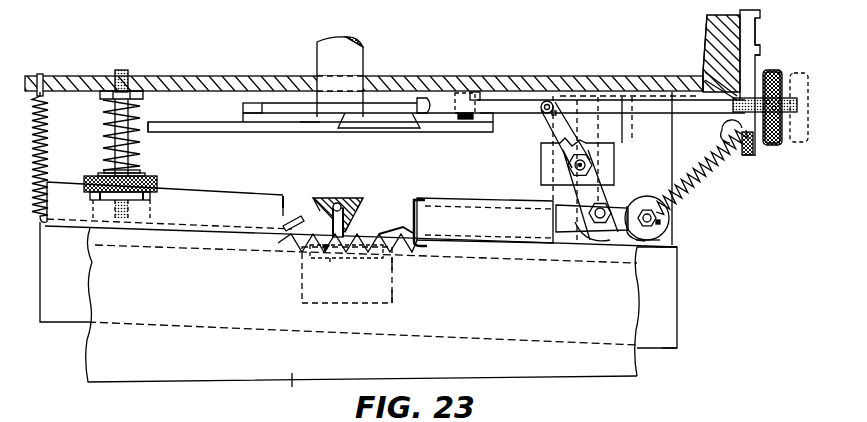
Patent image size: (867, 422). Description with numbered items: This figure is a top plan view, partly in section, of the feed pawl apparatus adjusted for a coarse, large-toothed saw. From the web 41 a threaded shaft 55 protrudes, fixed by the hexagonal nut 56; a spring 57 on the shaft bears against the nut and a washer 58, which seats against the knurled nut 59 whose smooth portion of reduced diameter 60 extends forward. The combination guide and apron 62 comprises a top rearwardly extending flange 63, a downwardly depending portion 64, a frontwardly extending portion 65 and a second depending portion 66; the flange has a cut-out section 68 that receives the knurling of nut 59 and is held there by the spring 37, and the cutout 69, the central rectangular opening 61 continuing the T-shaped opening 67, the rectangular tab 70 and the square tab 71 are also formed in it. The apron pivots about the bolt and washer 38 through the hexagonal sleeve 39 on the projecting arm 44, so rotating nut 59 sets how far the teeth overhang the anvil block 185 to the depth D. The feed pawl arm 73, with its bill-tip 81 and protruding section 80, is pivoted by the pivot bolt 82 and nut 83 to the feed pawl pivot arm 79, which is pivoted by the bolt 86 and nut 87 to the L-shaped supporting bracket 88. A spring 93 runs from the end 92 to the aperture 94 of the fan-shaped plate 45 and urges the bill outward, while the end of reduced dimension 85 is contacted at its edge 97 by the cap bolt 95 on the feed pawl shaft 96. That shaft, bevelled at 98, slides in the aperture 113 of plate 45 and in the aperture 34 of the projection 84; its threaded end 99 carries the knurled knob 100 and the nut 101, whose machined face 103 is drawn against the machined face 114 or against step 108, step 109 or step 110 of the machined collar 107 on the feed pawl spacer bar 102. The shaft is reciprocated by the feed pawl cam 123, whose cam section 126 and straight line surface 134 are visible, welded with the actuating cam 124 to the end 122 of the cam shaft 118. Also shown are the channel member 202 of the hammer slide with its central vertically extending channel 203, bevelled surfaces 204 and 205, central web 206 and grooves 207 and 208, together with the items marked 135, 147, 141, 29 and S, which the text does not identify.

The web 41 is at (197, 76).
The cam shaft 118 is at (365, 46).
The hexagonal nut 56 is at (100, 96).
The spring 37 is at (49, 119).
The threaded shaft 55 is at (103, 136).
The spring 57 is at (104, 160).
The washer 58 is at (98, 174).
The knurled nut 59 is at (152, 177).
The portion of reduced diameter 60 is at (96, 198).
The cut-out section 68 is at (155, 198).
The top rearwardly extending flange 63 is at (212, 191).
The downwardly depending portion 64 is at (71, 228).
The combination guide and apron 62 is at (677, 332).
The frontwardly extending portion 65 is at (670, 308).
The second depending portion 66 is at (668, 349).
The cutout 69 is at (663, 250).
The actuating cam 124 is at (233, 133).
The bar end 135 is at (150, 121).
The slide bar 147 is at (290, 121).
The straight line surface 134 is at (251, 102).
The feed pawl cam 123 is at (285, 104).
The cam section 126 is at (380, 105).
The end of cam shaft 122 is at (312, 123).
The bevelled end 98 is at (420, 97).
The bar end 141 is at (494, 123).
The aperture 34 is at (462, 97).
The projection 84 is at (474, 94).
The feed pawl shaft 96 is at (630, 106).
The cap bolt 95 is at (548, 101).
The edge 97 is at (553, 115).
The end of reduced dimension 85 is at (566, 95).
The bolt 86 is at (594, 167).
The nut 87 is at (592, 163).
The L-shaped supporting bracket 88 is at (541, 163).
The feed pawl pivot arm 79 is at (565, 190).
The pivot bolt 82 is at (600, 226).
The protruding section 80 is at (606, 249).
The nut 83 is at (583, 244).
The bolt and washer 38 is at (647, 198).
The hexagonal sleeve 39 is at (662, 222).
The end of feed pawl arm 92 is at (668, 236).
The spring 93 is at (707, 175).
The projecting arm 44 is at (674, 153).
The aperture 94 is at (722, 132).
The aperture 113 is at (735, 114).
The fan-shaped plate 45 is at (706, 23).
The block face 29 is at (707, 40).
The machined face 103 is at (706, 60).
The machined face 114 is at (705, 73).
The step 108 is at (760, 13).
The machined collar 107 is at (756, 26).
The step 109 is at (758, 40).
The step 110 is at (757, 55).
The threaded end 99 is at (797, 72).
The knurled knob 100 is at (776, 144).
The nut 101 is at (754, 142).
The feed pawl spacer bar 102 is at (748, 158).
The square tab 71 is at (425, 214).
The feed pawl arm 73 is at (470, 202).
The central rectangular opening 61 is at (281, 202).
The rectangular tab 70 is at (283, 217).
The bevelled surface 204 is at (299, 215).
The channel member 202 is at (332, 205).
The central vertically extending channel 203 is at (340, 205).
The groove 207 is at (322, 198).
The central web 206 is at (350, 200).
The groove 208 is at (360, 206).
The bevelled surface 205 is at (366, 232).
The anvil block 185 is at (380, 262).
The depth D is at (331, 264).
The T-shaped opening 67 is at (393, 298).
The bill-tip 81 is at (392, 262).
The surface S is at (291, 391).